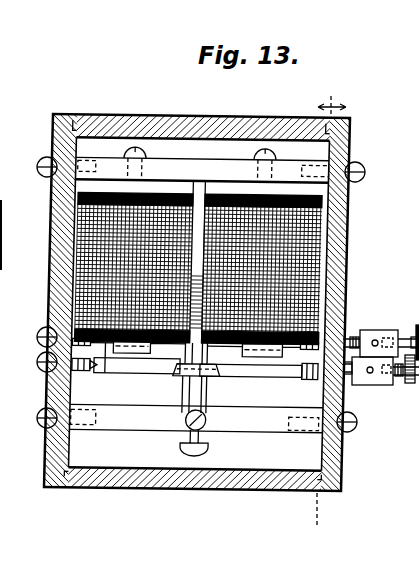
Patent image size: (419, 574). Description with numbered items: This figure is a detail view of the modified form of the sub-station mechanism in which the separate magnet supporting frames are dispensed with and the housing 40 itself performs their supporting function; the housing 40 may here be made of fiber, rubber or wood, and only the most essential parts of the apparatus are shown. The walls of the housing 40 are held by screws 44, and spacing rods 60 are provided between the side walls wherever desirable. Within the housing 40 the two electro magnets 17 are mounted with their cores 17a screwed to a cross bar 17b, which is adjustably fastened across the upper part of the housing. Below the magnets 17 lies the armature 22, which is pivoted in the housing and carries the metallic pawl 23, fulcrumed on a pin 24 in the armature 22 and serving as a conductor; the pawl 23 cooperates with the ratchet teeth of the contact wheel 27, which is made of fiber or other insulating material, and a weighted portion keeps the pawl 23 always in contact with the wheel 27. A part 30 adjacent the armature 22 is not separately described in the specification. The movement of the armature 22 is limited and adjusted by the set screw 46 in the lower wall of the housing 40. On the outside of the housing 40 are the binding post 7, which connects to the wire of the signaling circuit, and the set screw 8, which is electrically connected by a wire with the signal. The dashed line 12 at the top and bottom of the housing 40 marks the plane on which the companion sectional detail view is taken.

The section line 12 is at (325, 315).
The screws 44 is at (46, 160).
The cross bar 17b is at (210, 161).
The cores 17a is at (187, 184).
The electro magnets 17 is at (82, 232).
The housing 40 is at (54, 286).
The set screw 8 is at (383, 331).
The binding post 7 is at (372, 385).
The rod 30 is at (126, 368).
The contact wheel 27 is at (130, 236).
The metallic pawl 23 is at (186, 377).
The pin 24 is at (259, 379).
The armature 22 is at (262, 369).
The spacing rods 60 is at (141, 422).
The set screw 46 is at (205, 449).